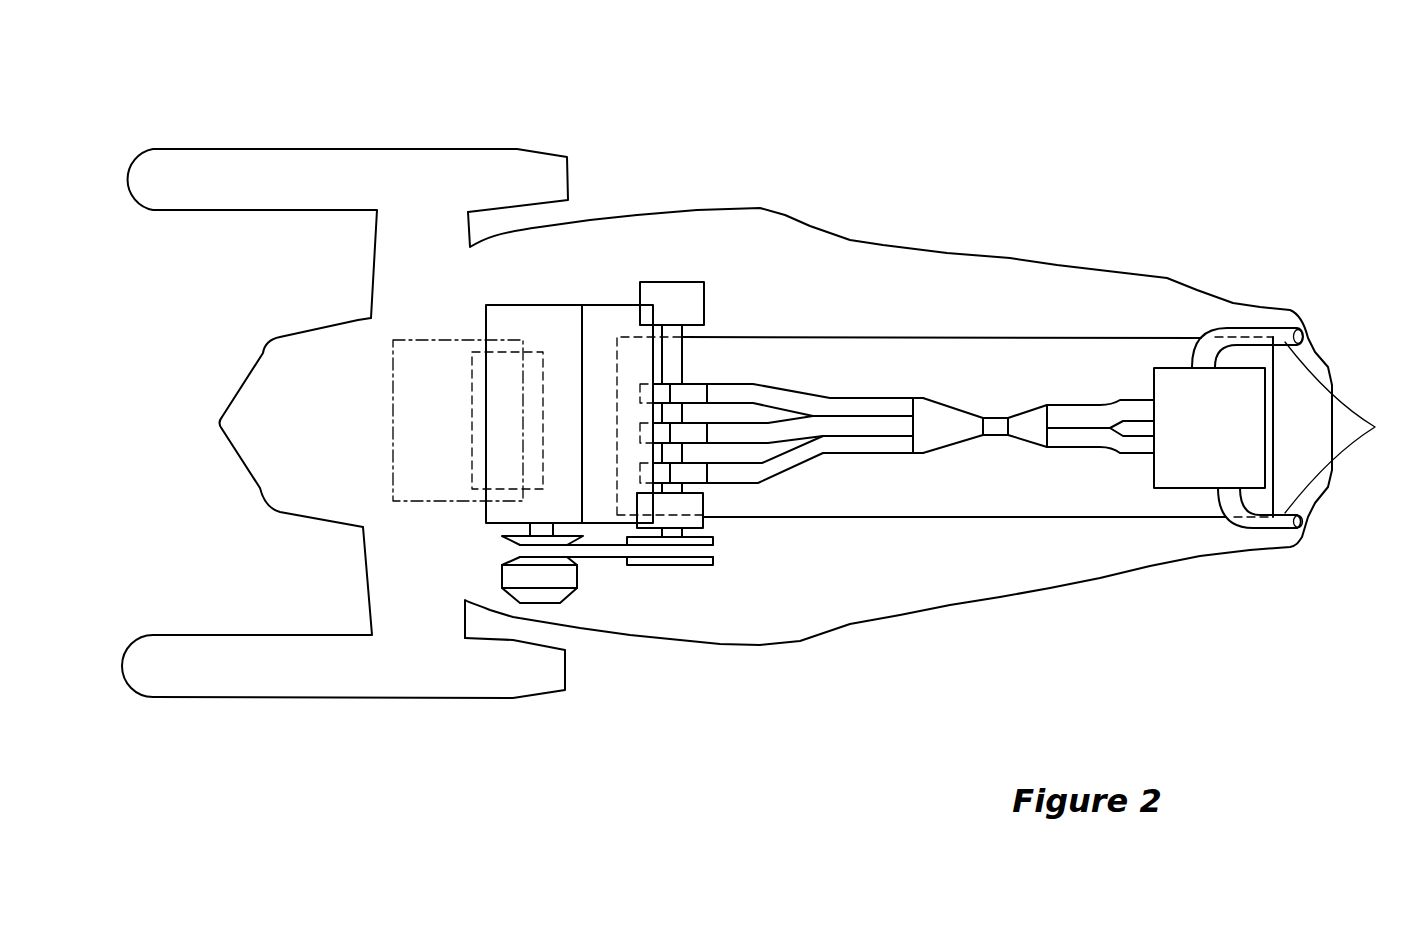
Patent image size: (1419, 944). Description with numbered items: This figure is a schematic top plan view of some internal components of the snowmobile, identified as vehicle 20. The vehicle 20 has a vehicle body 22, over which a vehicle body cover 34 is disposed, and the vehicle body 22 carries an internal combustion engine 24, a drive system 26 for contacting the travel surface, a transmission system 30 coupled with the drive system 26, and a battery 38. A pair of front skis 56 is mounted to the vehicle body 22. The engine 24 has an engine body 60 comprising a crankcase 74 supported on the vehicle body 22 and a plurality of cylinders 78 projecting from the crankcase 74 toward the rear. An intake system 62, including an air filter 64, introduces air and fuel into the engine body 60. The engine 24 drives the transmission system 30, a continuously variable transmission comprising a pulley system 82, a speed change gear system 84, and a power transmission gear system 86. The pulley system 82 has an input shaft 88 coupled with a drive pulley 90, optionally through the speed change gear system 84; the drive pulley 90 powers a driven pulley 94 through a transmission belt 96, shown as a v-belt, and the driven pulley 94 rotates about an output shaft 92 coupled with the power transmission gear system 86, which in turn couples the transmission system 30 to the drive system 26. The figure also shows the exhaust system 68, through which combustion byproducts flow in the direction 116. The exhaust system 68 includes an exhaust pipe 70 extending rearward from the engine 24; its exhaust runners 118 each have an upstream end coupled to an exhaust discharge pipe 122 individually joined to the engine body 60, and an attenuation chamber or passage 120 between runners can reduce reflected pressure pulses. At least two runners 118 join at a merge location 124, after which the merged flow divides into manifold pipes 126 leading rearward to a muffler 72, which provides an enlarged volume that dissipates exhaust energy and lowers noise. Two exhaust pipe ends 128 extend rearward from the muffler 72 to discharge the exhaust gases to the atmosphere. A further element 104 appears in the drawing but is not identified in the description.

The vehicle 20 is at (1216, 206).
The vehicle body 22 is at (1130, 232).
The internal combustion engine 24 is at (443, 405).
The drive system 26 is at (944, 328).
The transmission system 30 is at (603, 568).
The vehicle body cover 34 is at (263, 353).
The battery 38 is at (472, 443).
The front skis 56 is at (303, 148).
The engine body 60 is at (713, 324).
The intake system 62 is at (403, 326).
The air filter 64 is at (435, 338).
The exhaust system 68 is at (783, 506).
The exhaust pipe 70 is at (1033, 527).
The muffler 72 is at (1190, 465).
The crankcase 74 is at (528, 305).
The cylinders 78 is at (573, 305).
The pulley system 82 is at (587, 610).
The speed change gear system 84 is at (483, 566).
The power transmission gear system 86 is at (714, 292).
The input shaft 88 is at (507, 536).
The drive pulley 90 is at (537, 578).
The output shaft 92 is at (691, 538).
The driven pulley 94 is at (670, 565).
The transmission belt 96 is at (622, 563).
The chamber 104 is at (995, 363).
The exhaust flow direction 116 is at (842, 385).
The exhaust runners 118 is at (773, 476).
The attenuation chamber 120 is at (950, 440).
The exhaust discharge pipe 122 is at (647, 397).
The merge location 124 is at (992, 437).
The manifold pipes 126 is at (1098, 448).
The exhaust pipe ends 128 is at (1352, 427).